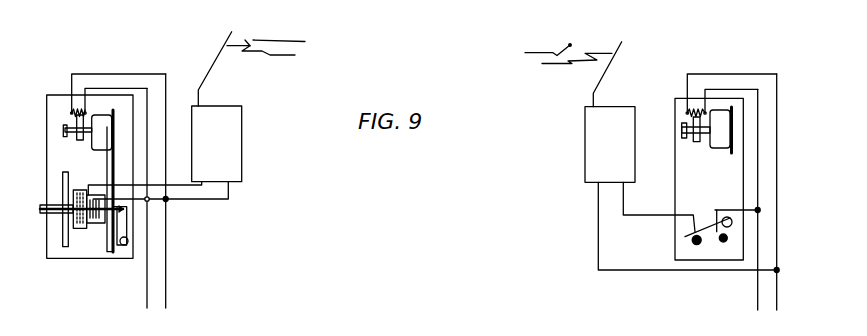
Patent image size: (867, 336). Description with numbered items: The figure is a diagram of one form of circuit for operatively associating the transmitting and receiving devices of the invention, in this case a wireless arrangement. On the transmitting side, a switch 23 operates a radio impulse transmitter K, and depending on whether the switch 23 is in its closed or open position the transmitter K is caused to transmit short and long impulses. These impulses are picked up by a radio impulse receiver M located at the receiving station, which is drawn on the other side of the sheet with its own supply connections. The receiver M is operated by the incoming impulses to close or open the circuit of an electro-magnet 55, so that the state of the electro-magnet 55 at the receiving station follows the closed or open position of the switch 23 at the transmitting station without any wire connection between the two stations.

The electro-magnet 55 is at (90, 226).
The switch 23 is at (712, 233).
The radio impulse receiver M is at (233, 150).
The radio impulse transmitter K is at (597, 152).